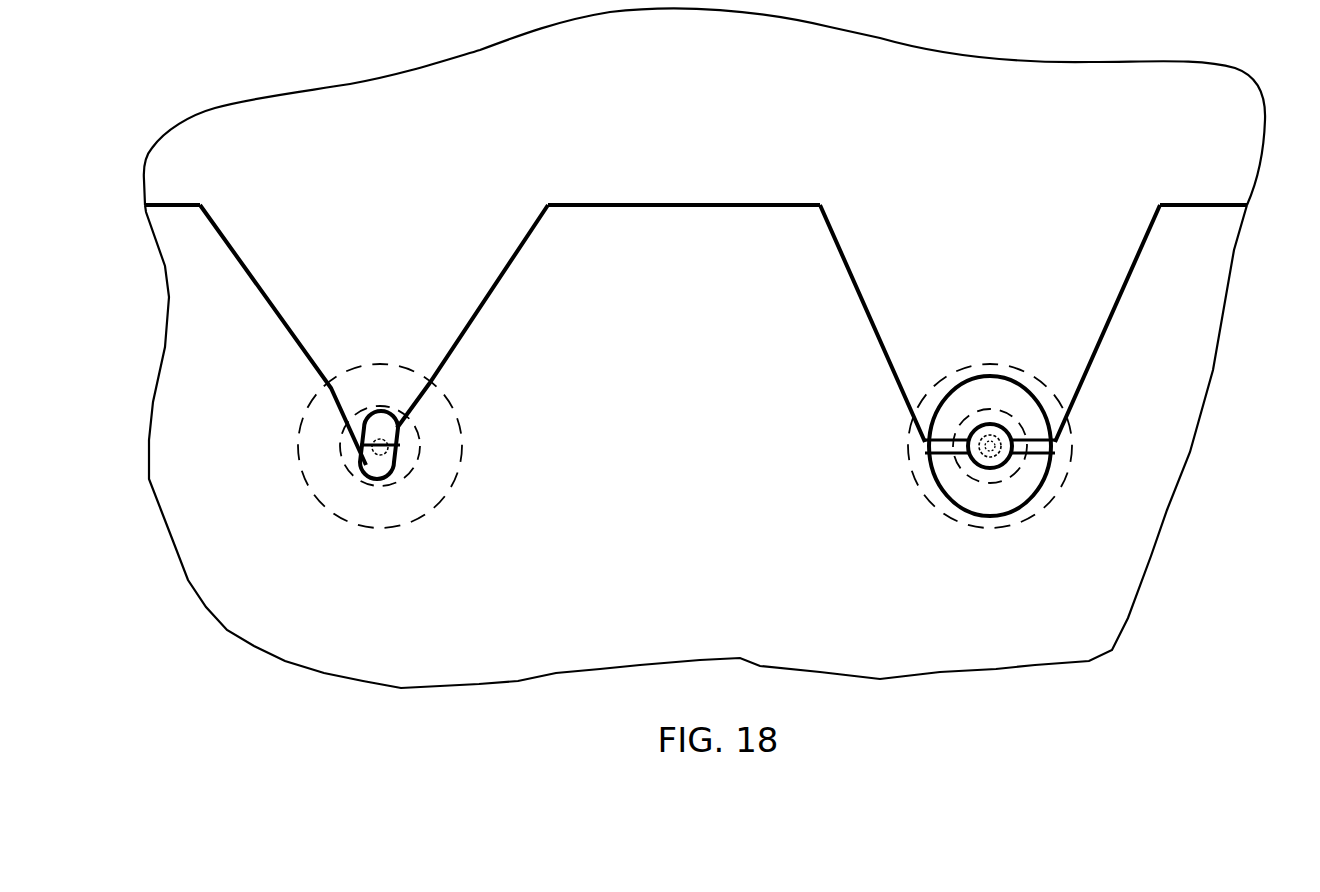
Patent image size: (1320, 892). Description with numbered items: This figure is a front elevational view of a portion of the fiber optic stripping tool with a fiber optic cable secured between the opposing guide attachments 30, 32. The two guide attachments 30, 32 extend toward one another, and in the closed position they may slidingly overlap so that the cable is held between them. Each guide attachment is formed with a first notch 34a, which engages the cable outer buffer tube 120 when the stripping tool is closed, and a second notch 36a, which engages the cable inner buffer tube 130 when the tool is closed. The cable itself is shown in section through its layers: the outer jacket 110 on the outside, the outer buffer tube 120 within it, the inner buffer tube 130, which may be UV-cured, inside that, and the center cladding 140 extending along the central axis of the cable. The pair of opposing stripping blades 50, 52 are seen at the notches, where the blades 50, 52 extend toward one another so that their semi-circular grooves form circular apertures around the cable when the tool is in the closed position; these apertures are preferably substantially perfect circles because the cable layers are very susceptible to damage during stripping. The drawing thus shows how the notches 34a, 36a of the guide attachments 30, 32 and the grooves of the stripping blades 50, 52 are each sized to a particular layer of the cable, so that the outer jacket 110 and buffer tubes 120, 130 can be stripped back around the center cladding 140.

The guide attachment 30 is at (713, 519).
The guide attachment 32 is at (670, 121).
The first notch 34a is at (867, 312).
The second notch 36a is at (372, 428).
The stripping blade 50 is at (395, 469).
The stripping blade 52 is at (368, 428).
The outer jacket 110 is at (466, 460).
The outer buffer tube 120 is at (421, 443).
The inner buffer tube 130 is at (400, 411).
The center cladding 140 is at (374, 455).